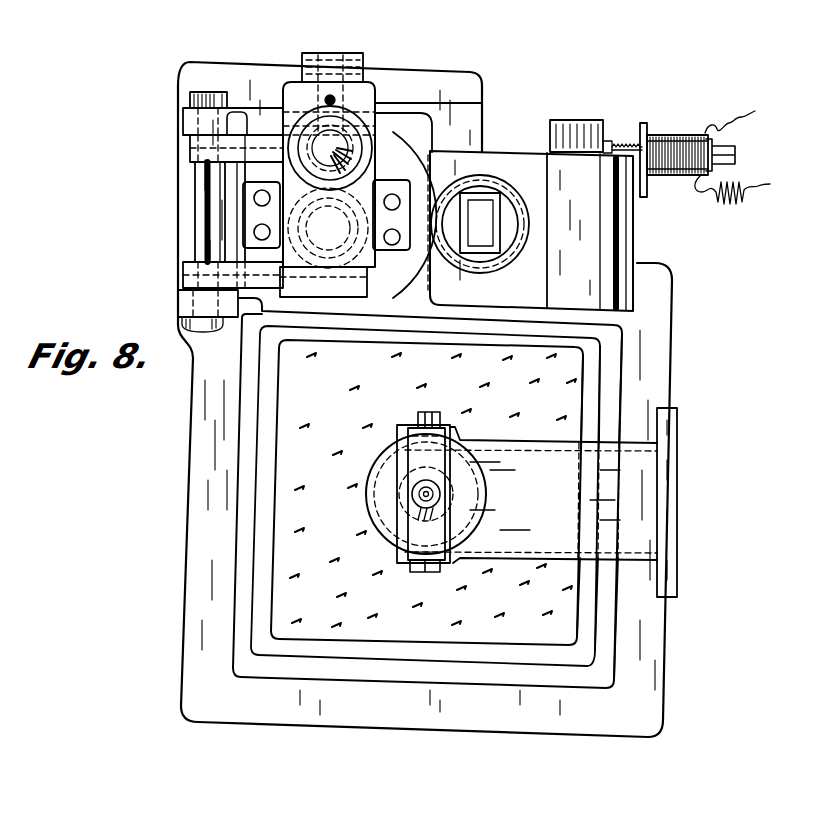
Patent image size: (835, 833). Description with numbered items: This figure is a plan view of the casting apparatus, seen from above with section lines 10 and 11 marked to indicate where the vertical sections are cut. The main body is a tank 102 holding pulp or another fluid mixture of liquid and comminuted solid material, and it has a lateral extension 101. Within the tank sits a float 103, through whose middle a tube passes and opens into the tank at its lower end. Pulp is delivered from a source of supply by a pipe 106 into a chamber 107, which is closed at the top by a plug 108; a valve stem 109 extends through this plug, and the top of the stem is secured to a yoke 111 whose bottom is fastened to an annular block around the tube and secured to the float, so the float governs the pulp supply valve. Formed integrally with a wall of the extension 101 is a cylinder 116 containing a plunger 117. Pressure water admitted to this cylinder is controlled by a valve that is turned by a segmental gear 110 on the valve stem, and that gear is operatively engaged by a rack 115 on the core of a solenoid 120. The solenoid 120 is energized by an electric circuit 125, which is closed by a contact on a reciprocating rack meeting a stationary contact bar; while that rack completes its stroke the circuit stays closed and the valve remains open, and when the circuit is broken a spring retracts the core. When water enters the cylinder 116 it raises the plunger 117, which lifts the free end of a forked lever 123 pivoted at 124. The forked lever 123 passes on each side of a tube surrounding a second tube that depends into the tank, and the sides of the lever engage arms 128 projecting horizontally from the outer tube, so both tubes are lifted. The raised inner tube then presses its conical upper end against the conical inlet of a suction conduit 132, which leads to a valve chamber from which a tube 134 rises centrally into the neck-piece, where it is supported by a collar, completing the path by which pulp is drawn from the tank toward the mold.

The section line 10— 10 is at (433, 333).
The section line 11— 11 is at (430, 262).
The extension 101 is at (426, 112).
The tank 102 is at (233, 493).
The float 103 is at (427, 492).
The pipe 106 is at (541, 506).
The chamber 107 is at (482, 497).
The plug 108 is at (475, 523).
The valve stem 109 is at (430, 482).
The segmental gear 110 is at (585, 156).
The yoke 111 is at (424, 524).
The rack 115 is at (615, 156).
The cylinder 116 is at (530, 231).
The plunger 117 is at (508, 196).
The solenoid 120 is at (681, 136).
The forked lever 123 is at (385, 290).
The pivot 124 is at (193, 263).
The electric circuit 125 is at (756, 108).
The arms 128 is at (421, 159).
The suction conduit 132 is at (328, 228).
The tube 134 is at (328, 228).